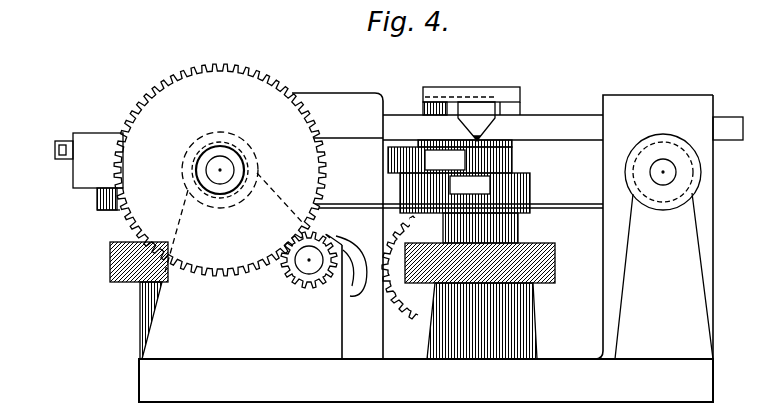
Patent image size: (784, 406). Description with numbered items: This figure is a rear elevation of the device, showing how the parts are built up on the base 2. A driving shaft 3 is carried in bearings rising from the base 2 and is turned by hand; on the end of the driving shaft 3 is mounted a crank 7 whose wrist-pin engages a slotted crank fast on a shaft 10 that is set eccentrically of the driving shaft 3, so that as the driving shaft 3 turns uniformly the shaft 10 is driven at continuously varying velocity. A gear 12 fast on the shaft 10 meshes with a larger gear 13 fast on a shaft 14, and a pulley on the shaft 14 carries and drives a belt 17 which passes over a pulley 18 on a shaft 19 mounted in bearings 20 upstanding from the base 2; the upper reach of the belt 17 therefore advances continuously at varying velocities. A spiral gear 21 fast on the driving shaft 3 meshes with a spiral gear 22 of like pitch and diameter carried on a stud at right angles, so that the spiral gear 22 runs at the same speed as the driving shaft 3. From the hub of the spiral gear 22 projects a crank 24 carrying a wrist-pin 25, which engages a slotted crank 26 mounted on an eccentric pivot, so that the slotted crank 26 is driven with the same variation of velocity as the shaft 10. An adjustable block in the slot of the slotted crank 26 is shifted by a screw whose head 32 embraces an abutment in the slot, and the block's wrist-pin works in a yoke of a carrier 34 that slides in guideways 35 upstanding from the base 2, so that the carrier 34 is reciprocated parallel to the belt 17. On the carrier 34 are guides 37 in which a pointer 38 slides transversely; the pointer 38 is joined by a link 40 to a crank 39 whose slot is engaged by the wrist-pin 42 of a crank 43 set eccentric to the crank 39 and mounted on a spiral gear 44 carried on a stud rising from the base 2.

The base 2 is at (426, 380).
The driving shaft 3 is at (353, 264).
The crank 7 is at (314, 186).
The shaft 10 is at (306, 264).
The gear 12 is at (317, 282).
The larger gear 13 is at (243, 248).
The shaft 14 is at (176, 175).
The belt 17 is at (578, 206).
The pulley 18 is at (640, 161).
The shaft 19 is at (665, 188).
The bearings 20 is at (670, 155).
The spiral gear 21 is at (394, 297).
The spiral gear 22 is at (110, 266).
The crank 24 is at (98, 200).
The wrist-pin 25 is at (112, 212).
The slotted crank 26 is at (86, 176).
The head 32 is at (72, 142).
The carrier 34 is at (493, 127).
The guideways 35 is at (386, 100).
The guides 37 is at (513, 112).
The pointer 38 is at (478, 112).
The crank 39 is at (450, 156).
The link 40 is at (447, 88).
The wrist-pin 42 is at (415, 212).
The crank 43 is at (463, 206).
The spiral gear 44 is at (548, 285).